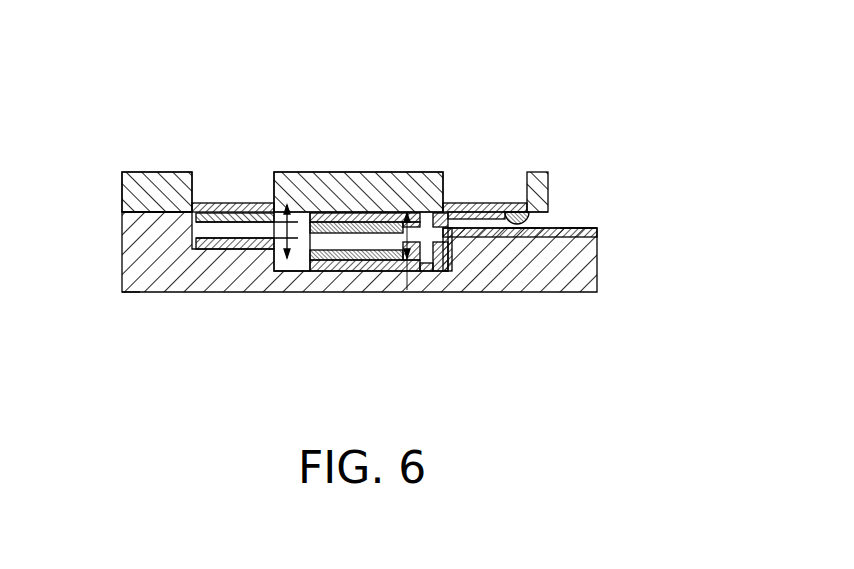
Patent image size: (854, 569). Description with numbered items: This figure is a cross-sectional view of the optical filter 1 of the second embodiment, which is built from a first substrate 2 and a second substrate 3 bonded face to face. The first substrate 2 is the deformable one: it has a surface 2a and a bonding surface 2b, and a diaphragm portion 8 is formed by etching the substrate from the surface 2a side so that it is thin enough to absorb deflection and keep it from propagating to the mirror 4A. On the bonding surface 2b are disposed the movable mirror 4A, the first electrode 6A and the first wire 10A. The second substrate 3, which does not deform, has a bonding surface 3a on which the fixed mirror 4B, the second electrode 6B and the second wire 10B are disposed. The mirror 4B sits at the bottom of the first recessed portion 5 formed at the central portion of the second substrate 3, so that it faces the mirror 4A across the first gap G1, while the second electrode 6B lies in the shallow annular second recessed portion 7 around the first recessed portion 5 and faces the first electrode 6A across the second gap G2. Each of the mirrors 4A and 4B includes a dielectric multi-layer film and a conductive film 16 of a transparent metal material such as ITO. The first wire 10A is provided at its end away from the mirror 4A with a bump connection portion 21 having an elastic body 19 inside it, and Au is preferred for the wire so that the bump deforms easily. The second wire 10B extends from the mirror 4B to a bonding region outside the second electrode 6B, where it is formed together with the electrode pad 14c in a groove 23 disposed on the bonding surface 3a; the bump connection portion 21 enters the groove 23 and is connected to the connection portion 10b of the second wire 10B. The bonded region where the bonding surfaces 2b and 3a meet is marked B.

The optical filter 1 is at (643, 93).
The first substrate 2 is at (544, 172).
The surface 2a is at (140, 172).
The bonding surface 2b is at (160, 211).
The second substrate 3 is at (597, 270).
The bonding surface 3a is at (122, 213).
The mirror 4A is at (336, 192).
The mirror 4B is at (328, 266).
The first recessed portion 5 is at (283, 262).
The first electrode 6A is at (230, 213).
The second electrode 6B is at (225, 249).
The second recessed portion 7 is at (205, 246).
The diaphragm portion 8 is at (258, 204).
The first wire 10A is at (455, 204).
The second wire 10B is at (456, 266).
The connection portion 10b is at (520, 238).
The electrode pad 14c is at (597, 229).
The conductive film 16 is at (355, 226).
The elastic body 19 is at (514, 212).
The bump connection portion 21 is at (533, 220).
The groove 23 is at (563, 238).
The first gap G1 is at (407, 213).
The second gap G2 is at (287, 205).
The bonding portion B is at (343, 182).